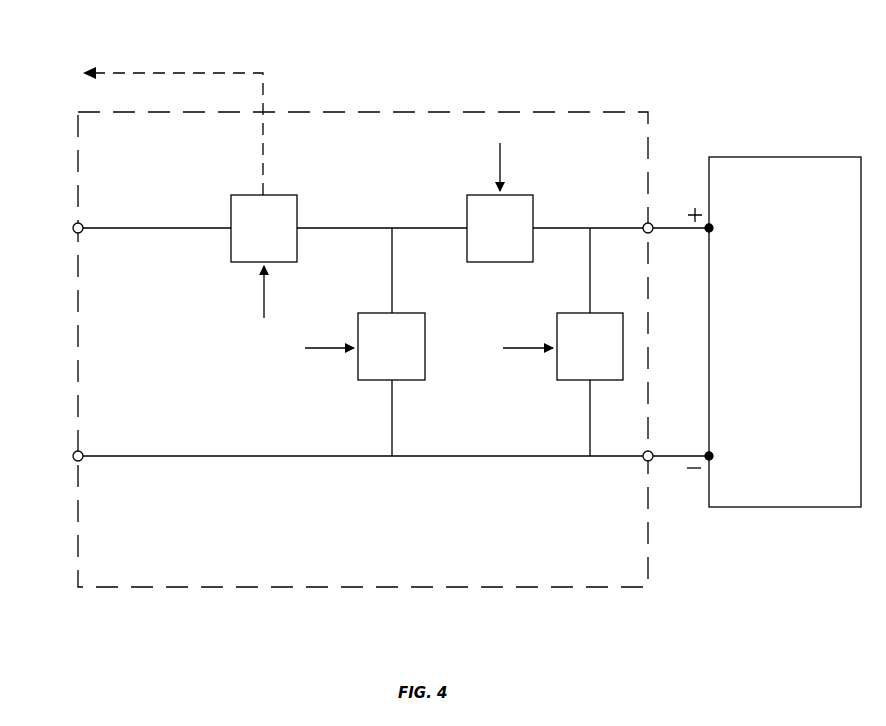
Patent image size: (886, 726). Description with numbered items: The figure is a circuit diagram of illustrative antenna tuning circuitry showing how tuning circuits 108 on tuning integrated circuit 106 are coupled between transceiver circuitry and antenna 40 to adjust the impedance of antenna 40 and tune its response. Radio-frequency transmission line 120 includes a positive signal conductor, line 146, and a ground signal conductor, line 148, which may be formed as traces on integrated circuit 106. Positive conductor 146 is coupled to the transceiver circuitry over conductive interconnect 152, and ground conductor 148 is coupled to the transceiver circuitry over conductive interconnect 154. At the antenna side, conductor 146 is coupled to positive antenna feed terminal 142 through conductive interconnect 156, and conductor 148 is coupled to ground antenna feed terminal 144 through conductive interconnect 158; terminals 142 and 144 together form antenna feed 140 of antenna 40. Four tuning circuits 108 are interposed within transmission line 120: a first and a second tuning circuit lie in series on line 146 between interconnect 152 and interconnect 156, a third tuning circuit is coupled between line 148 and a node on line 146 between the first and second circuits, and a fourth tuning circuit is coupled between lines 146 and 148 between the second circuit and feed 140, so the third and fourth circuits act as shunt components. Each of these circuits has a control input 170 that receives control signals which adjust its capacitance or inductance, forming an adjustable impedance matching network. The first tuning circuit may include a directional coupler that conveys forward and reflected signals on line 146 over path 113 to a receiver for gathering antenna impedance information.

The antenna 40 is at (792, 157).
The tuning integrated circuit 106 is at (295, 587).
The tuning circuit 108 is at (282, 195).
The path 113 is at (190, 73).
The radio-frequency transmission line 120 is at (95, 468).
The antenna feed 140 is at (696, 244).
The positive antenna feed terminal 142 is at (715, 228).
The ground antenna feed terminal 144 is at (715, 456).
The positive signal conductor 146 is at (143, 228).
The ground signal conductor 148 is at (193, 458).
The conductive interconnect 152 is at (72, 229).
The conductive interconnect 154 is at (72, 457).
The conductive interconnect 156 is at (655, 222).
The conductive interconnect 158 is at (652, 462).
The control input 170 is at (258, 293).